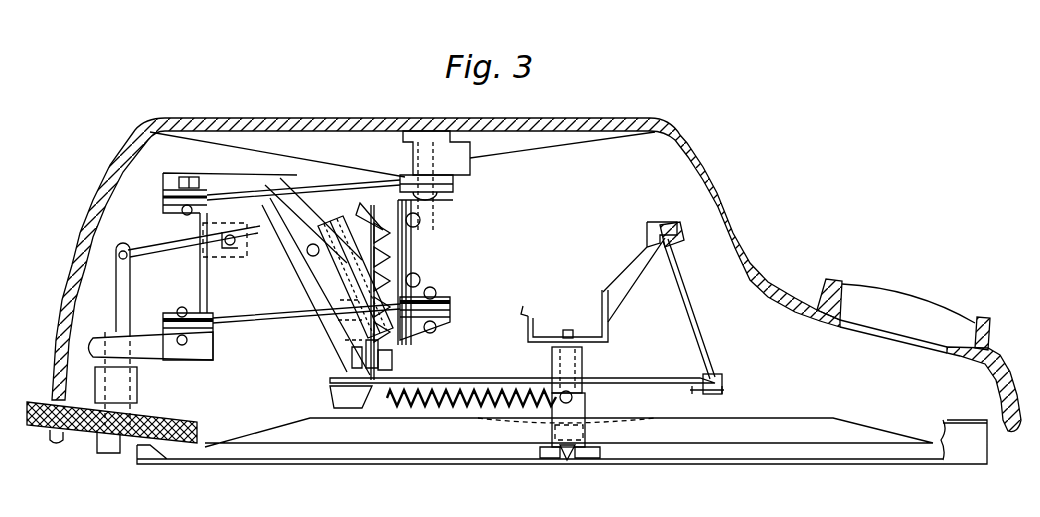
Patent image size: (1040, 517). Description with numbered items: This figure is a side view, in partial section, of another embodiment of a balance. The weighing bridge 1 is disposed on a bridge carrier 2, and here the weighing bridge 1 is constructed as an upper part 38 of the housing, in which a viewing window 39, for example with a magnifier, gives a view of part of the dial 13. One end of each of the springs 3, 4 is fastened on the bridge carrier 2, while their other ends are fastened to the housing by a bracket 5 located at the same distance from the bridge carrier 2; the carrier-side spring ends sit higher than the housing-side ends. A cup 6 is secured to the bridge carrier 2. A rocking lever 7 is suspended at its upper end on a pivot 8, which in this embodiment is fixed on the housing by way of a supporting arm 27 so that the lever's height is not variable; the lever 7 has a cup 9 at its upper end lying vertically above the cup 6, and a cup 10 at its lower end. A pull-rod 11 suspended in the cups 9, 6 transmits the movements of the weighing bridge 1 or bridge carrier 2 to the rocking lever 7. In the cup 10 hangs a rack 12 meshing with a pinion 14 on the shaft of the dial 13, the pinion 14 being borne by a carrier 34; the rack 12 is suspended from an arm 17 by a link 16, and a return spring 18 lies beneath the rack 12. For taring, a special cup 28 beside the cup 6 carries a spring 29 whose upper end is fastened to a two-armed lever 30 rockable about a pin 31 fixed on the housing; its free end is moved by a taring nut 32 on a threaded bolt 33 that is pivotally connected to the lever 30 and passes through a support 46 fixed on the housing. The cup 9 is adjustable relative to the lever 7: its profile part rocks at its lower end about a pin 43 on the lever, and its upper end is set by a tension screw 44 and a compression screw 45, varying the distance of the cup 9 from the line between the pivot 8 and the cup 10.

The weighing bridge 1 is at (450, 150).
The bridge carrier 2 is at (412, 248).
The spring 3 is at (356, 192).
The spring 4 is at (270, 320).
The bracket 5 is at (205, 282).
The cup 6 is at (400, 323).
The lever 7 is at (330, 335).
The pivot 8 is at (310, 258).
The cup 9 is at (390, 198).
The cup 10 is at (347, 378).
The pull-rod 11 is at (405, 282).
The rack 12 is at (487, 378).
The dial 13 is at (702, 446).
The pinion 14 is at (583, 363).
The link 16 is at (690, 318).
The arm 17 is at (628, 267).
The return spring 18 is at (428, 396).
The supporting arm 27 is at (236, 181).
The special cup 28 is at (428, 338).
The spring 29 is at (347, 320).
The two-armed lever 30 is at (290, 250).
The pin 31 is at (178, 242).
The taring nut 32 is at (88, 430).
The threaded bolt 33 is at (115, 257).
The carrier 34 is at (528, 317).
The upper part of the housing 38 is at (700, 157).
The viewing window 39 is at (876, 296).
The pin 43 is at (360, 283).
The tension screw 44 is at (298, 222).
The compression screw 45 is at (310, 262).
The support 46 is at (157, 352).